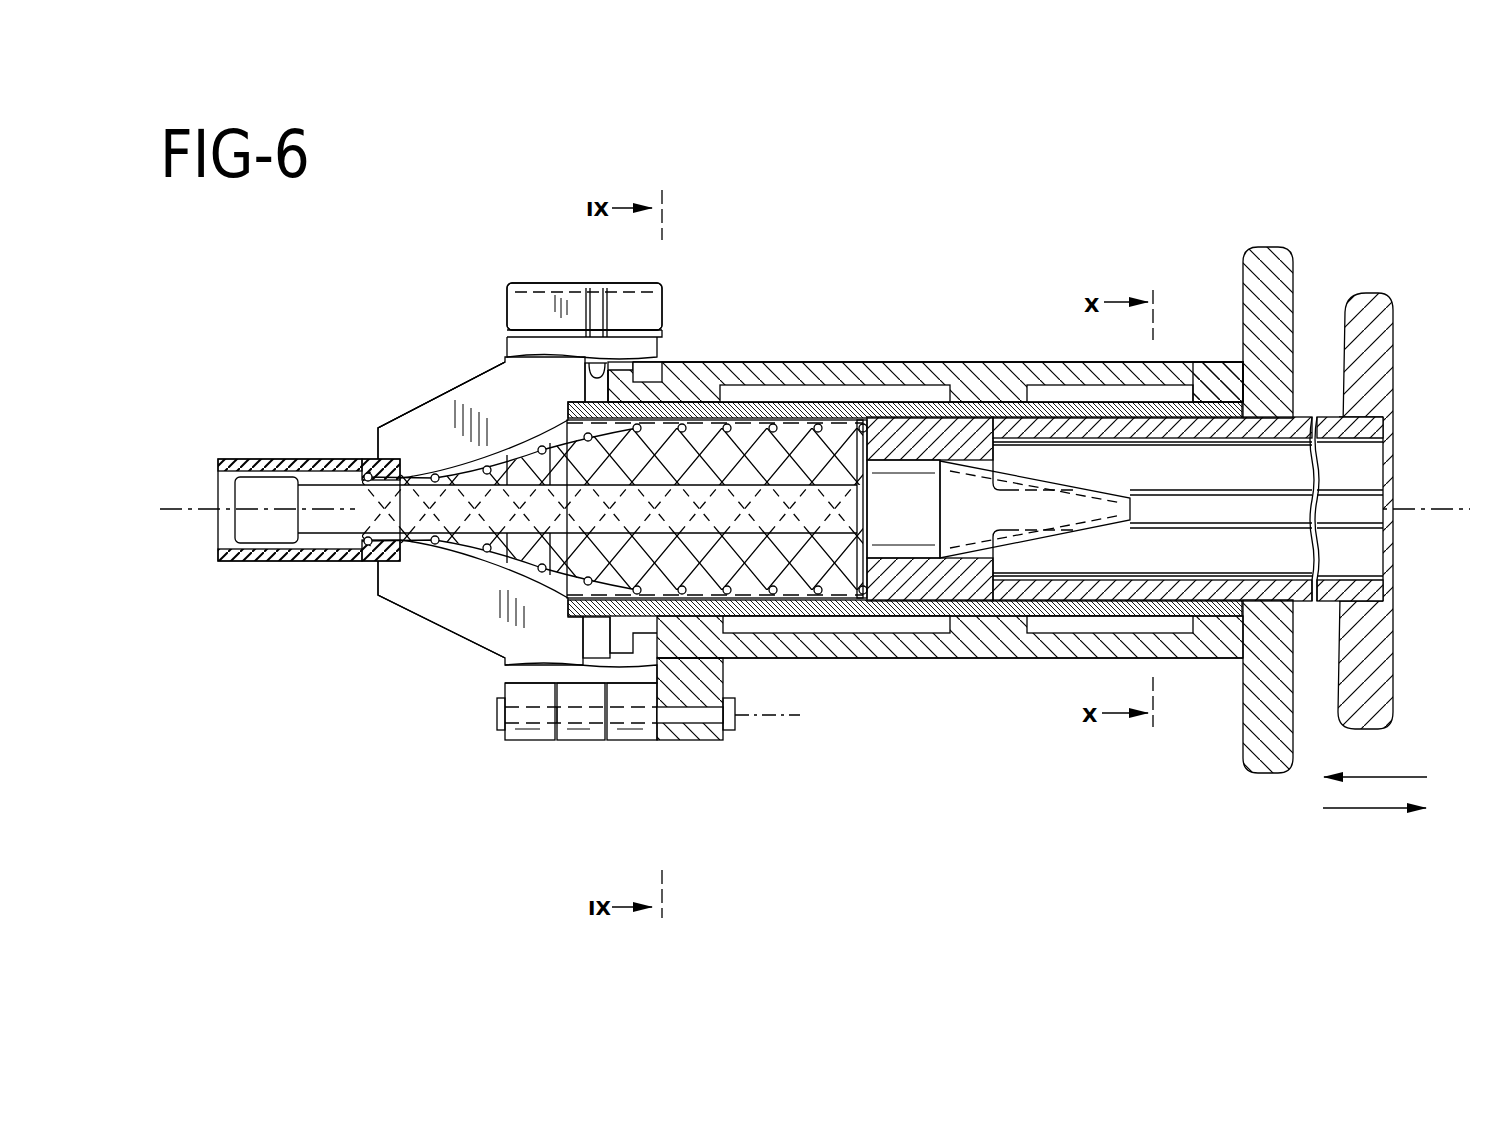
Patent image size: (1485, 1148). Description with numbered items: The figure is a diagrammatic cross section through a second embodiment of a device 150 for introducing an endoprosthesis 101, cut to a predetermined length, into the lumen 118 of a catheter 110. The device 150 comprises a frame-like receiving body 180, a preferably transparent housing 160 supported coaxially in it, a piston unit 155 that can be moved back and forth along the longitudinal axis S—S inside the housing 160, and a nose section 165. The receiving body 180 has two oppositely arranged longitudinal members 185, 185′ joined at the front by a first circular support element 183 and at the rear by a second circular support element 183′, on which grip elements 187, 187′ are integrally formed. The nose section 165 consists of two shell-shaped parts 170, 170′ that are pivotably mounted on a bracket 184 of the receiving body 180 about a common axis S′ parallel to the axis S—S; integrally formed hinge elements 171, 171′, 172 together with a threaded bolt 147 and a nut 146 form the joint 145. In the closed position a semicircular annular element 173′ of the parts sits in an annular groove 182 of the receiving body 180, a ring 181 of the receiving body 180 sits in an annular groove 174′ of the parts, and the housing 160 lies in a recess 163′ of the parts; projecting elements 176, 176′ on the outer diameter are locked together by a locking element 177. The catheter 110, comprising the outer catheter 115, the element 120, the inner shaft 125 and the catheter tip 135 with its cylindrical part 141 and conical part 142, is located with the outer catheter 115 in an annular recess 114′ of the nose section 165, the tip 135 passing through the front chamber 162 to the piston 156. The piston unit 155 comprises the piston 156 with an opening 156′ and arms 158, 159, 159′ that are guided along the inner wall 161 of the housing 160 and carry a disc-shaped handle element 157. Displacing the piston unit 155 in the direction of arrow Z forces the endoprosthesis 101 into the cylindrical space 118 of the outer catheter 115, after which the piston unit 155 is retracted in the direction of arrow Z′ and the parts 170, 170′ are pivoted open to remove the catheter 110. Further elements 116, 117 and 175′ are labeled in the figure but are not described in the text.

The endoprosthesis 101 is at (850, 600).
The catheter 110 is at (213, 404).
The annular recess 114′ is at (377, 467).
The outer catheter 115 is at (263, 458).
The inner tube 116 is at (335, 478).
The housing body 117 is at (503, 677).
The lumen 118 is at (330, 551).
The catheter element 120 is at (263, 561).
The inner shaft 125 is at (352, 515).
The catheter tip 135 is at (1050, 542).
The cylindrical part 141 is at (910, 508).
The conical part 142 is at (1030, 394).
The joint 145 is at (497, 728).
The nut 146 is at (500, 738).
The threaded bolt 147 is at (567, 722).
The device 150 is at (995, 255).
The piston unit 155 is at (1318, 610).
The piston 156 is at (990, 602).
The opening 156′ is at (975, 602).
The handle element 157 is at (1375, 308).
The arm 158 is at (1291, 493).
The arm 159 is at (1125, 430).
The arm 159′ is at (1190, 585).
The housing 160 is at (1053, 640).
The inner wall 161 is at (795, 592).
The front chamber 162 is at (778, 452).
The recess 163′ is at (573, 630).
The nose section 165 is at (482, 263).
The shell-shaped part 170 is at (503, 347).
The shell-shaped part 170′ is at (410, 405).
The hinge element 171 is at (533, 740).
The hinge element 171′ is at (633, 740).
The hinge element 172 is at (587, 740).
The semicircular annular element 173′ is at (648, 366).
The annular groove 174′ is at (605, 378).
The thread 175′ is at (495, 428).
The projecting element 176 is at (663, 290).
The projecting element 176′ is at (528, 312).
The locking element 177 is at (543, 283).
The receiving body 180 is at (928, 358).
The ring 181 is at (598, 395).
The annular groove 182 is at (652, 715).
The first circular support element 183 is at (722, 362).
The second circular support element 183′ is at (1215, 365).
The bracket 184 is at (703, 727).
The longitudinal member 185 is at (835, 362).
The longitudinal member 185′ is at (1215, 659).
The grip element 187 is at (1268, 248).
The grip element 187′ is at (1265, 745).
The longitudinal axis S is at (168, 507).
The pivot axis S′ is at (770, 717).
The arrow direction Z is at (1387, 777).
The arrow direction Z′ is at (1358, 813).